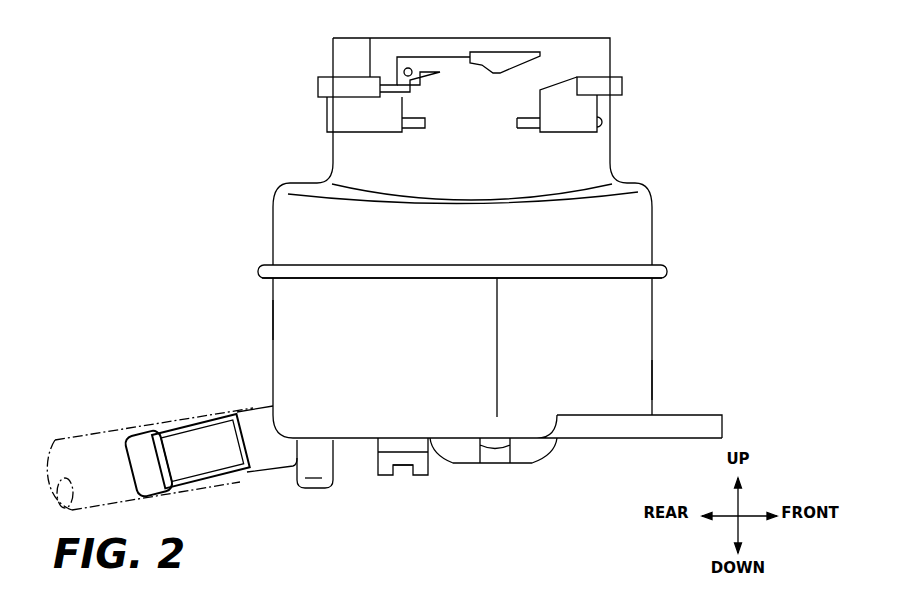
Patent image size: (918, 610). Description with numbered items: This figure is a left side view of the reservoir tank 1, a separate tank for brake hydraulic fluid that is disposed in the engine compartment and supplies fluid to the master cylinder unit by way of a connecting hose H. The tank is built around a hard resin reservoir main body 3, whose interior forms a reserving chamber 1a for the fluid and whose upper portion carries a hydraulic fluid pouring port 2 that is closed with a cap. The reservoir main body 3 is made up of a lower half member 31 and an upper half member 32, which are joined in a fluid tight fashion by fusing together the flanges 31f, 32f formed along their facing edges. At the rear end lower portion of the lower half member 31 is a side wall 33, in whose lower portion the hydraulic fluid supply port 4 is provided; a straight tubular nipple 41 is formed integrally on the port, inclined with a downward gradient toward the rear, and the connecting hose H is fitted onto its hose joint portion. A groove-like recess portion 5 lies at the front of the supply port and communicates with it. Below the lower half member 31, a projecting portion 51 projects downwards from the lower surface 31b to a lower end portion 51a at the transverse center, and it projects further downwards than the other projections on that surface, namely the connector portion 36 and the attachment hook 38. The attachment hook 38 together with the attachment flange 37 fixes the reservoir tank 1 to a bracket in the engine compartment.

The reservoir tank 1 is at (250, 132).
The reserving chamber 1a is at (638, 375).
The hydraulic fluid pouring port 2 is at (612, 143).
The reservoir main body 3 is at (723, 190).
The lower half member 31 is at (647, 322).
The lower surface 31b is at (355, 442).
The flange 31f is at (262, 283).
The upper half member 32 is at (647, 237).
The flange 32f is at (262, 263).
The side wall 33 is at (310, 325).
The hydraulic fluid supply port 4 is at (252, 407).
The nipple 41 is at (195, 433).
The recess portion 5 is at (338, 473).
The projecting portion 51 is at (348, 480).
The lower end portion 51a is at (312, 492).
The connector portion 36 is at (530, 463).
The attachment flange 37 is at (712, 413).
The attachment hook 38 is at (418, 477).
The connecting hose H is at (98, 435).